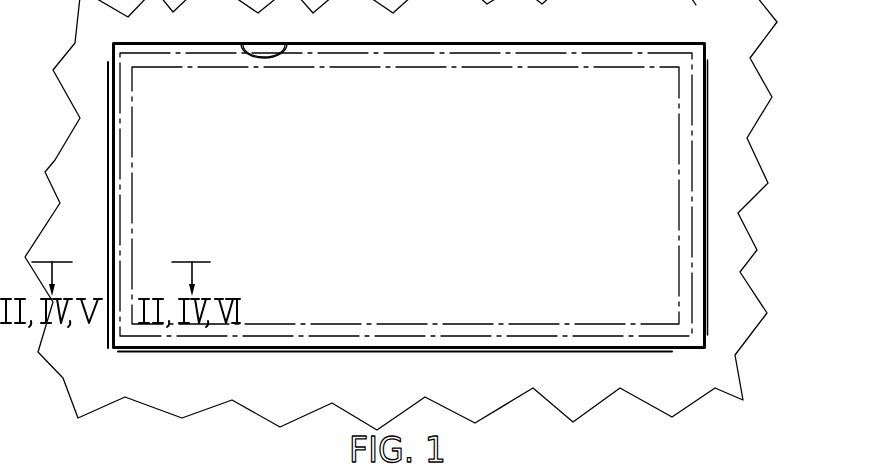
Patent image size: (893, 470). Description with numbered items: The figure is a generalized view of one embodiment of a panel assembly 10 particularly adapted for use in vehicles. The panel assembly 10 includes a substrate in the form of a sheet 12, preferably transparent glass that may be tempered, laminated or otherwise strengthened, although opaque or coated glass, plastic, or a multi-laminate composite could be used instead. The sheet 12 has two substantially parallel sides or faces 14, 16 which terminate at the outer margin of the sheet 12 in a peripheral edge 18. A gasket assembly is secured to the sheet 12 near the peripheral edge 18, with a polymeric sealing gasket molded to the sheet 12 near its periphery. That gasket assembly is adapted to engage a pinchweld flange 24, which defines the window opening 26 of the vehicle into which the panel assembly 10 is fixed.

The panel assembly 10 is at (722, 33).
The sheet 12 is at (408, 178).
The face 14 is at (652, 94).
The face 16 is at (573, 82).
The peripheral edge 18 is at (428, 47).
The pinchweld flange 24 is at (238, 47).
The window opening 26 is at (242, 37).